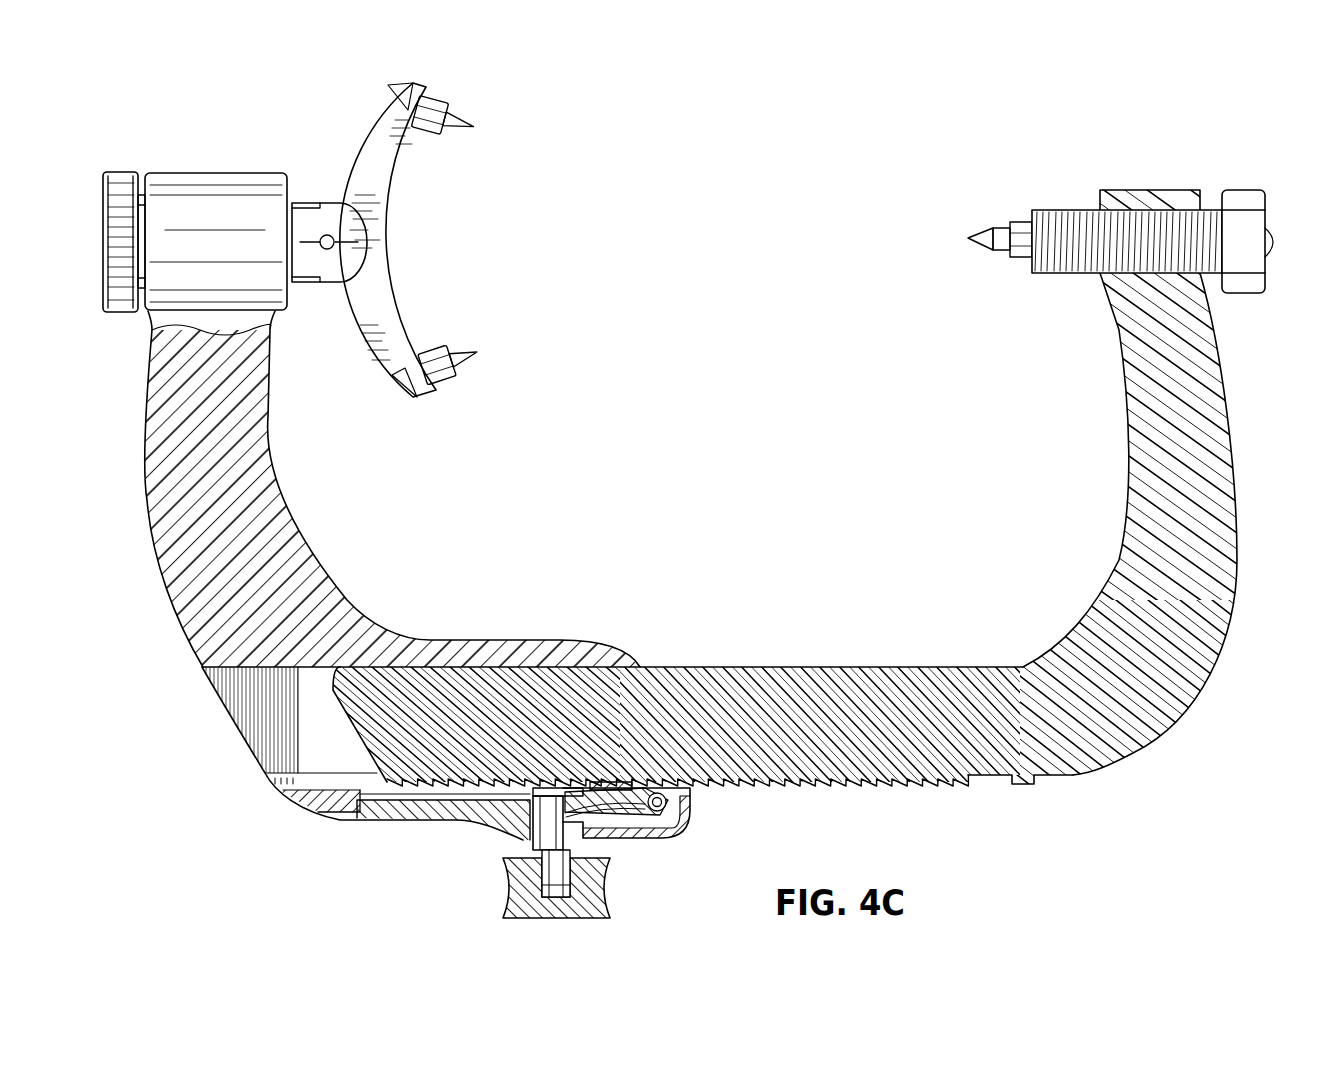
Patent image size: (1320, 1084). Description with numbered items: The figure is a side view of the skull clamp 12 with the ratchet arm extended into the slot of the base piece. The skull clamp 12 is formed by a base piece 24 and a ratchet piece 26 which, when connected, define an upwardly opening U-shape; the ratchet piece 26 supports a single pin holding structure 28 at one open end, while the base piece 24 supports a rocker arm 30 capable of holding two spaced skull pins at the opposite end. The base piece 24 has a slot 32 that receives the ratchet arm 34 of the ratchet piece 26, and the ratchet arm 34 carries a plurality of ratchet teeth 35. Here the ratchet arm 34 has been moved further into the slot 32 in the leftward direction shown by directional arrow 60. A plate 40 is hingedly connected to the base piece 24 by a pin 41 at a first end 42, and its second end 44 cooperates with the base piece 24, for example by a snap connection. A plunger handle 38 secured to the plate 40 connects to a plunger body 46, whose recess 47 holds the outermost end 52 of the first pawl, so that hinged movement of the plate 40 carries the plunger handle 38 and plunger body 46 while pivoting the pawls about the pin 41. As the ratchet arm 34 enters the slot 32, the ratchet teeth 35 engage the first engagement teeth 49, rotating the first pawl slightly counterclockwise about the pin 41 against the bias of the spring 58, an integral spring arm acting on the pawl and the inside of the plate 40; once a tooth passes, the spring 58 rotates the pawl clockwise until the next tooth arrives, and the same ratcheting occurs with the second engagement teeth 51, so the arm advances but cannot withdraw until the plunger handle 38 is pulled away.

The skull clamp 12 is at (1246, 145).
The base piece 24 is at (333, 565).
The ratchet piece 26 is at (1071, 640).
The single pin holding structure 28 is at (1045, 210).
The rocker arm 30 is at (392, 177).
The slot 32 is at (472, 672).
The ratchet arm 34 is at (792, 665).
The ratchet teeth 35 is at (863, 786).
The plunger handle 38 is at (613, 912).
The plate 40 is at (447, 822).
The pin 41 is at (677, 804).
The first end 42 is at (687, 830).
The second end 44 is at (373, 818).
The plunger body 46 is at (550, 873).
The recess 47 is at (557, 779).
The first engagement tooth 49 is at (600, 778).
The second engagement tooth 51 is at (613, 777).
The outermost end 52 is at (533, 812).
The spring 58 is at (637, 818).
The directional arrow 60 is at (848, 650).